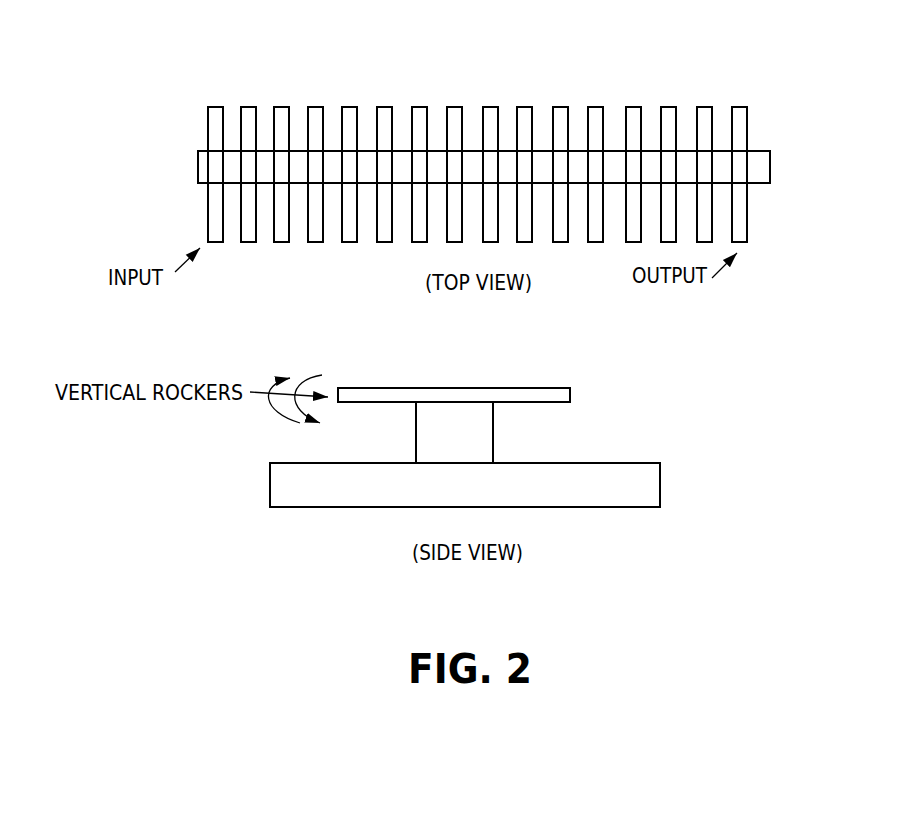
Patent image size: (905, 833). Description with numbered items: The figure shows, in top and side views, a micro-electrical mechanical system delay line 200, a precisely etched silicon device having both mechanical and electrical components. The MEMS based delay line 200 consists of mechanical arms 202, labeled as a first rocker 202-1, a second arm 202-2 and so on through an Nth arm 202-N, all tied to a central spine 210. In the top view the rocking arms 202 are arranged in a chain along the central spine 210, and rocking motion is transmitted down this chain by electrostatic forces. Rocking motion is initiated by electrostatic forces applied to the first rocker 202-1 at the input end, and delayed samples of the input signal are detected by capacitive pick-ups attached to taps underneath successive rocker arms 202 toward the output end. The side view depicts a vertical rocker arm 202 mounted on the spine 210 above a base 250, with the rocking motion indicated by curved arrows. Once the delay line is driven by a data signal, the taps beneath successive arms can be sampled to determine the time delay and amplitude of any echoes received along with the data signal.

The MEMS delay line 200 is at (111, 75).
The mechanical arms 202 is at (463, 215).
The first rocker 202-1 is at (216, 107).
The second mechanical arm 202-2 is at (250, 107).
The Nth mechanical arm 202-N is at (743, 107).
The central spine 210 is at (770, 165).
The substrate base 250 is at (660, 487).